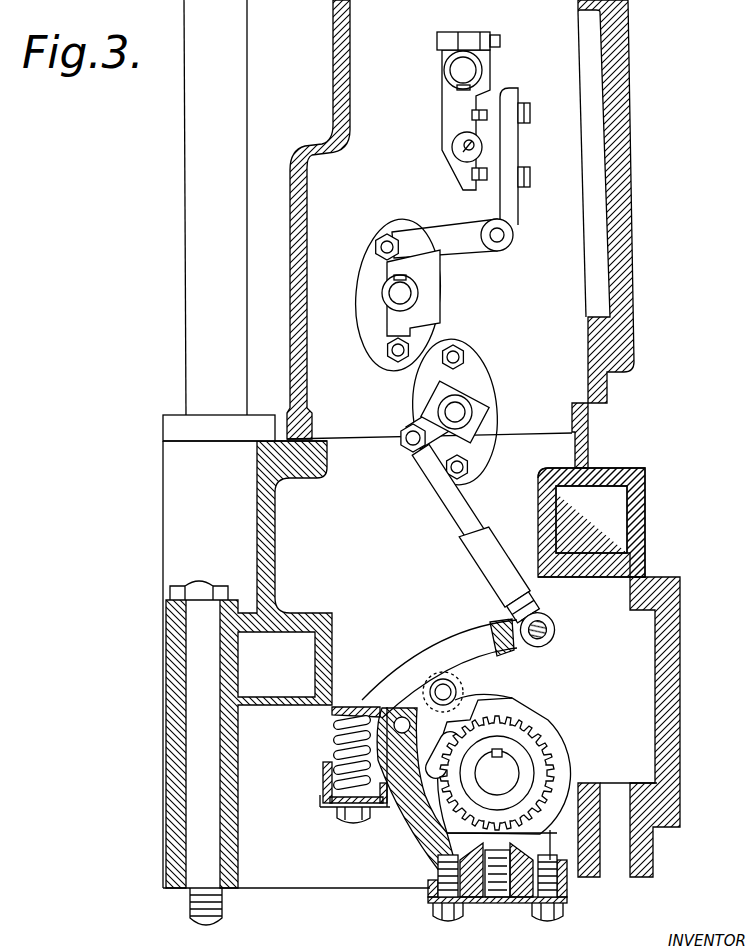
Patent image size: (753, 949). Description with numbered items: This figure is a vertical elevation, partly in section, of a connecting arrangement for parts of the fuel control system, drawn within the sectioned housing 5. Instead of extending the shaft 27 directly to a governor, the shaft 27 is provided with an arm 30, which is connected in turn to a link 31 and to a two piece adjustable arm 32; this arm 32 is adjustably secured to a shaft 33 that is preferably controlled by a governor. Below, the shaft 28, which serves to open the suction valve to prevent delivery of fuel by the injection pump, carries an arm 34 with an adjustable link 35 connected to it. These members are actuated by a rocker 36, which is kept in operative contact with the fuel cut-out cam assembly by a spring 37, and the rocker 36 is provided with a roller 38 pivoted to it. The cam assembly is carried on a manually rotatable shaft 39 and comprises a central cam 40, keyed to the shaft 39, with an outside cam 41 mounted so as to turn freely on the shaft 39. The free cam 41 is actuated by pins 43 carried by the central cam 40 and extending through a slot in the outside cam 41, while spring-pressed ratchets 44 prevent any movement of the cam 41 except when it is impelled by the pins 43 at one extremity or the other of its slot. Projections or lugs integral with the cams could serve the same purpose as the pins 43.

The housing 5 is at (332, 99).
The shaft 27 is at (404, 292).
The shaft 28 is at (472, 413).
The arm 30 is at (383, 266).
The link 31 is at (449, 243).
The two piece adjustable arm 32 is at (442, 128).
The shaft 33 is at (447, 72).
The arm 34 is at (410, 424).
The adjustable link 35 is at (490, 568).
The rocker 36 is at (443, 664).
The spring 37 is at (333, 742).
The roller 38 is at (465, 698).
The manually rotatable shaft 39 is at (505, 770).
The central cam 40 is at (525, 712).
The cam 41 is at (440, 788).
The pins 43 is at (447, 740).
The ratchets 44 is at (503, 874).